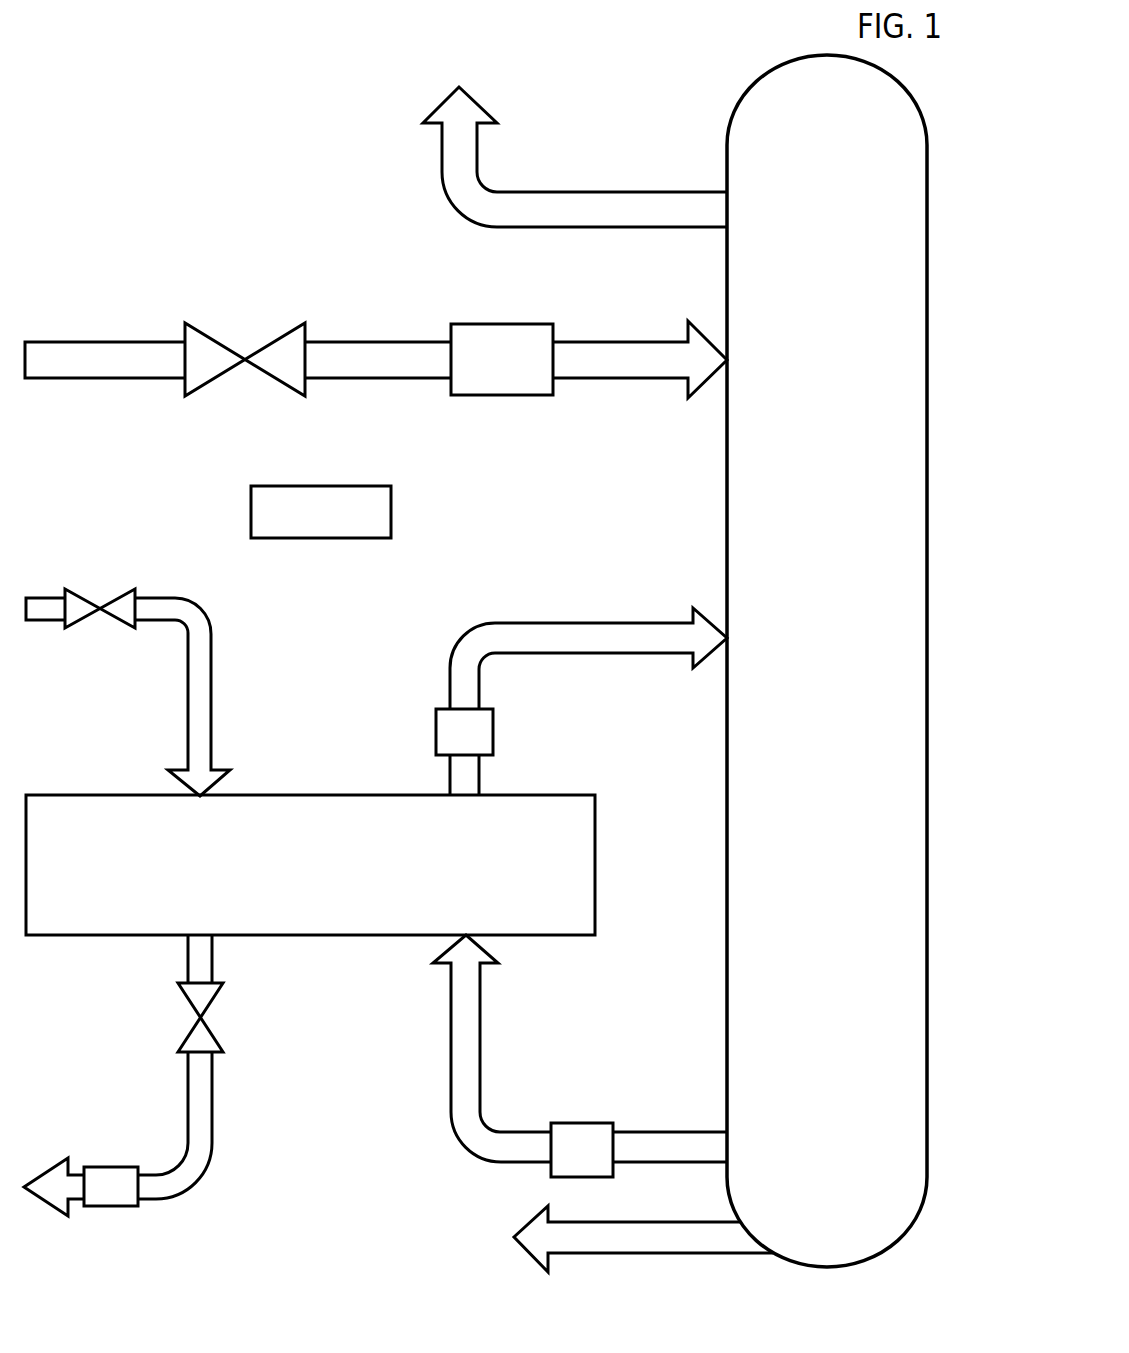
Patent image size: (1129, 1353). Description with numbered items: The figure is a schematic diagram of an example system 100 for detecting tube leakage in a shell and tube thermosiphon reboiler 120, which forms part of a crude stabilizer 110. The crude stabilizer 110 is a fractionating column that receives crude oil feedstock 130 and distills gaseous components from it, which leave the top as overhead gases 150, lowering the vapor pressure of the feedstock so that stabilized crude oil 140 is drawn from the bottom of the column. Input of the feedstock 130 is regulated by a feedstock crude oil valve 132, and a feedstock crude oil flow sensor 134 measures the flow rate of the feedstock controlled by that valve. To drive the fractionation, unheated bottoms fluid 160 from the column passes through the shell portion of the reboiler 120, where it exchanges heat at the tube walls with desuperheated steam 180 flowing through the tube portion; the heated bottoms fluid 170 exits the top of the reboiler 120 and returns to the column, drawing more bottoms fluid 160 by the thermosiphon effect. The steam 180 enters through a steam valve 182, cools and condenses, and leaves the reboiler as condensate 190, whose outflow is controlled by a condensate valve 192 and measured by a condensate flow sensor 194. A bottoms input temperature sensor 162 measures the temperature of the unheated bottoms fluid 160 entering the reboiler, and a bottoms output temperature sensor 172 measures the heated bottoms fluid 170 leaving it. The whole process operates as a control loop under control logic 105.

The system 100 is at (94, 164).
The control logic 105 is at (342, 526).
The crude stabilizer 110 is at (850, 677).
The thermosiphon reboiler 120 is at (333, 880).
The crude oil feedstock 130 is at (376, 375).
The feedstock crude oil valve 132 is at (263, 335).
The feedstock crude oil flow sensor 134 is at (521, 373).
The stabilized crude oil 140 is at (613, 1239).
The overhead gases 150 is at (575, 157).
The unheated bottoms fluid 160 is at (560, 1048).
The bottoms input temperature sensor 162 is at (602, 1163).
The heated bottoms fluid 170 is at (588, 701).
The bottoms output temperature sensor 172 is at (482, 743).
The desuperheated steam 180 is at (128, 697).
The steam valve 182 is at (118, 588).
The condensate 190 is at (118, 1094).
The condensate valve 192 is at (180, 1030).
The condensate flow sensor 194 is at (129, 1200).